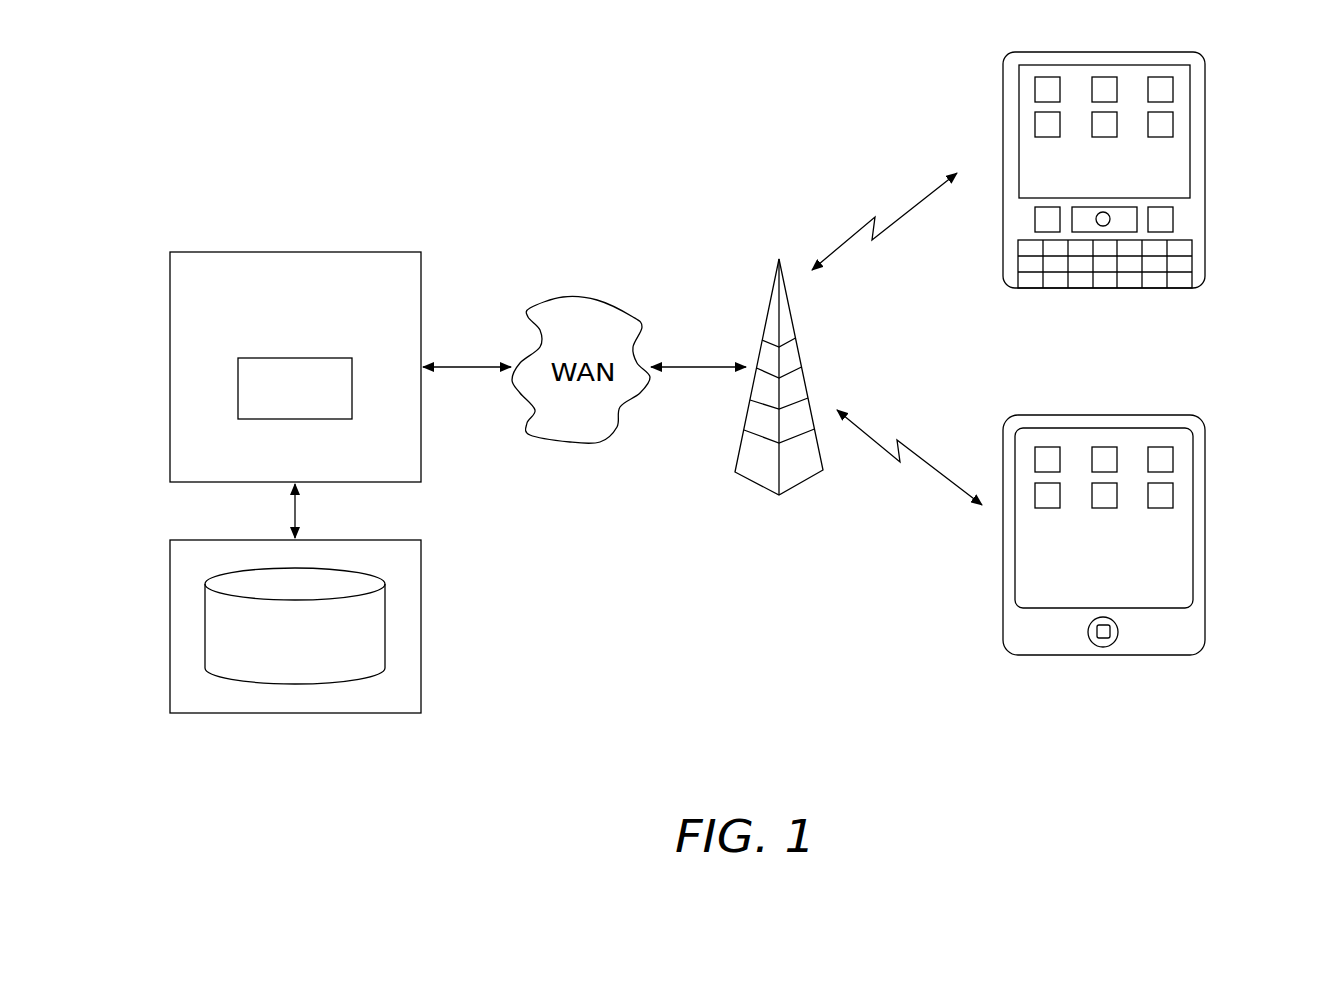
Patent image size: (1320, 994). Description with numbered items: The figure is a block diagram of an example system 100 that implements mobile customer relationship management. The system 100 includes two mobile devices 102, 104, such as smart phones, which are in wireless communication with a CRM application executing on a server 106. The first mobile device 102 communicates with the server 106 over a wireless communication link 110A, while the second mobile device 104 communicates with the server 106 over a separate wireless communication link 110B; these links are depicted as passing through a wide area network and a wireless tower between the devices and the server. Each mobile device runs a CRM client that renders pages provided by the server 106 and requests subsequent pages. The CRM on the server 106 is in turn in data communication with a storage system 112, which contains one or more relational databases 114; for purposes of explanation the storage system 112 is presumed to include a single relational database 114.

The system 100 is at (660, 106).
The mobile device 102 is at (1205, 143).
The mobile device 104 is at (1205, 513).
The server 106 is at (422, 273).
The wireless communication link 110A is at (837, 247).
The wireless communication link 110B is at (943, 480).
The storage system 112 is at (422, 570).
The relational database 114 is at (277, 653).